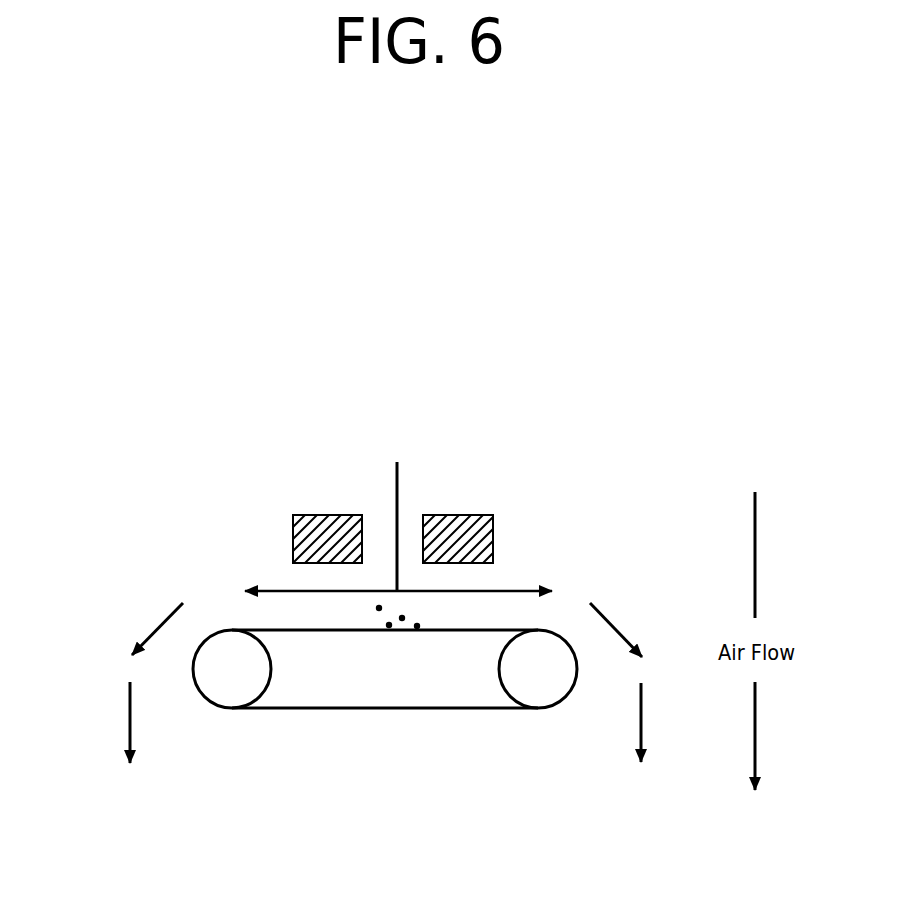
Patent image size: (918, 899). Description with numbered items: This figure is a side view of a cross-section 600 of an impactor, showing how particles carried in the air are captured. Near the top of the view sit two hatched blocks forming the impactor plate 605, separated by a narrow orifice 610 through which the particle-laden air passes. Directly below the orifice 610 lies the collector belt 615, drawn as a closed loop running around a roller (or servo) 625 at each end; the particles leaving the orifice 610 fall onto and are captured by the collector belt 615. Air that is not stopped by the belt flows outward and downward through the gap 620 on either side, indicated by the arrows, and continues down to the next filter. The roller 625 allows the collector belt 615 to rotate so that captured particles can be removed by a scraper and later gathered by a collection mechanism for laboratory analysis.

The cross-section 600 is at (105, 170).
The impactor plate 605 is at (493, 538).
The orifice 610 is at (378, 487).
The collector belt 615 is at (450, 712).
The gap 620 is at (192, 577).
The roller 625 is at (232, 712).